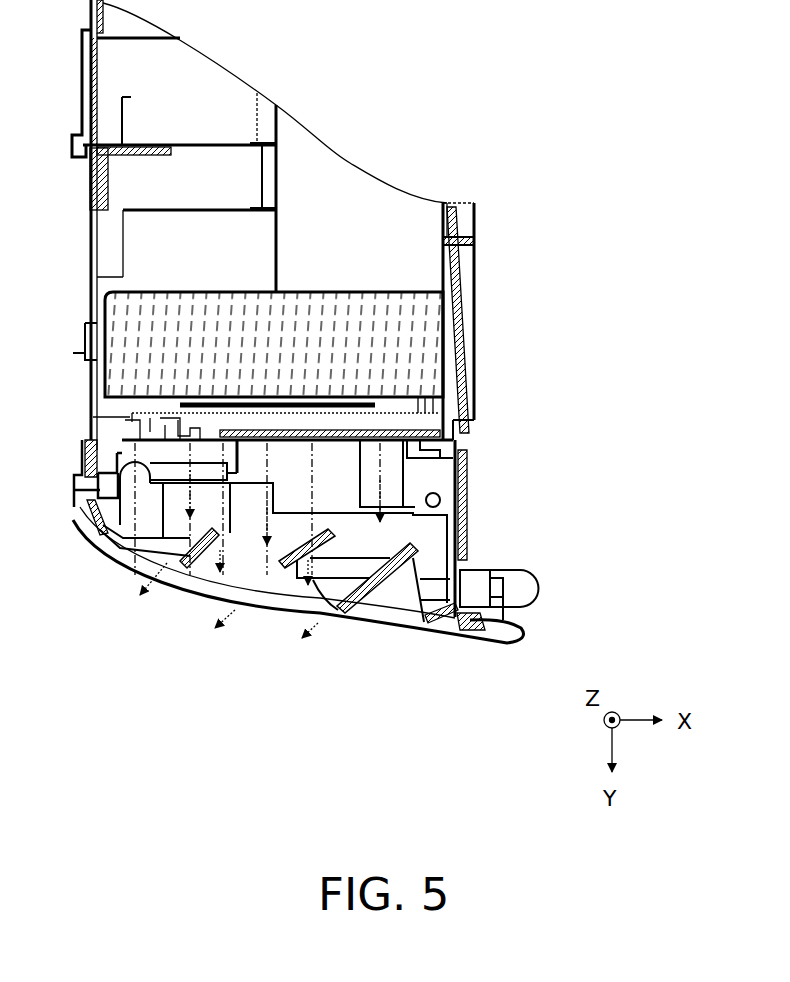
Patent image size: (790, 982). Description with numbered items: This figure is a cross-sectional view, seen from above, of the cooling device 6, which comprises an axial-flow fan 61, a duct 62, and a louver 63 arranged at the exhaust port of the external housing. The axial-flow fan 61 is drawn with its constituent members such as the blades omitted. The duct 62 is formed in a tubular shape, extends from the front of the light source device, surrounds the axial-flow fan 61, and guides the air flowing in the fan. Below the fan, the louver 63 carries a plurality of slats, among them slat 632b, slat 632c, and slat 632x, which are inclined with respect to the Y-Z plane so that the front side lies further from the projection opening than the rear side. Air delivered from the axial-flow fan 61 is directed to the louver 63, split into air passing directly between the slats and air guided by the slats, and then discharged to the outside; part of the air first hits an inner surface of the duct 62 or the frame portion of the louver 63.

The cooling device 6 is at (349, 362).
The axial-flow fan 61 is at (425, 350).
The duct 62 is at (425, 222).
The louver 63 is at (305, 582).
The slat 632b is at (282, 588).
The slat 632c is at (197, 565).
The fin 632x is at (375, 590).